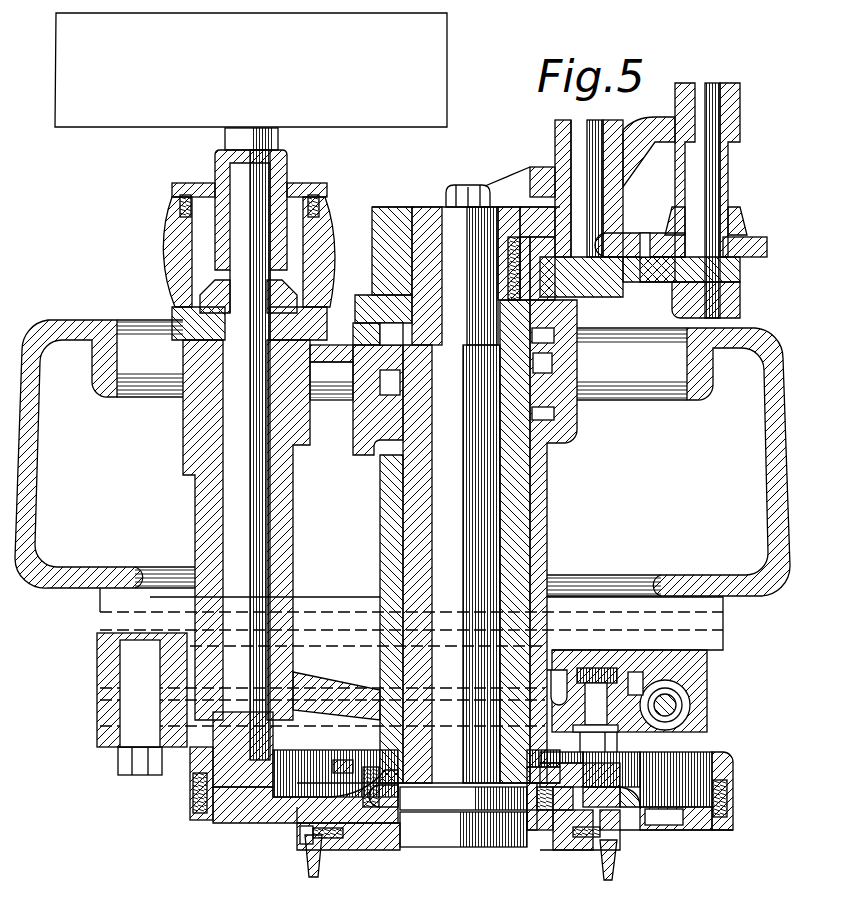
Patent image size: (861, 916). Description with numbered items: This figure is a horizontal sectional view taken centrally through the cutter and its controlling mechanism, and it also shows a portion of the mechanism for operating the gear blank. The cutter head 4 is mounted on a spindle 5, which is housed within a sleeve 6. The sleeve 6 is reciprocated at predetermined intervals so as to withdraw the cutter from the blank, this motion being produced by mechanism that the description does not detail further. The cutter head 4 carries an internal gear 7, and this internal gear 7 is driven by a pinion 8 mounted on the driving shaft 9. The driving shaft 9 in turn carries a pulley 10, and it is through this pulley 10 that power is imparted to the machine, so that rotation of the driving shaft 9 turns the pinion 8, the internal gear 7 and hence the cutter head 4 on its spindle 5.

The cutter head 4 is at (387, 838).
The spindle 5 is at (471, 484).
The sleeve 6 is at (508, 540).
The internal gear 7 is at (243, 790).
The pinion 8 is at (250, 745).
The driving shaft 9 is at (248, 444).
The pulley 10 is at (251, 70).